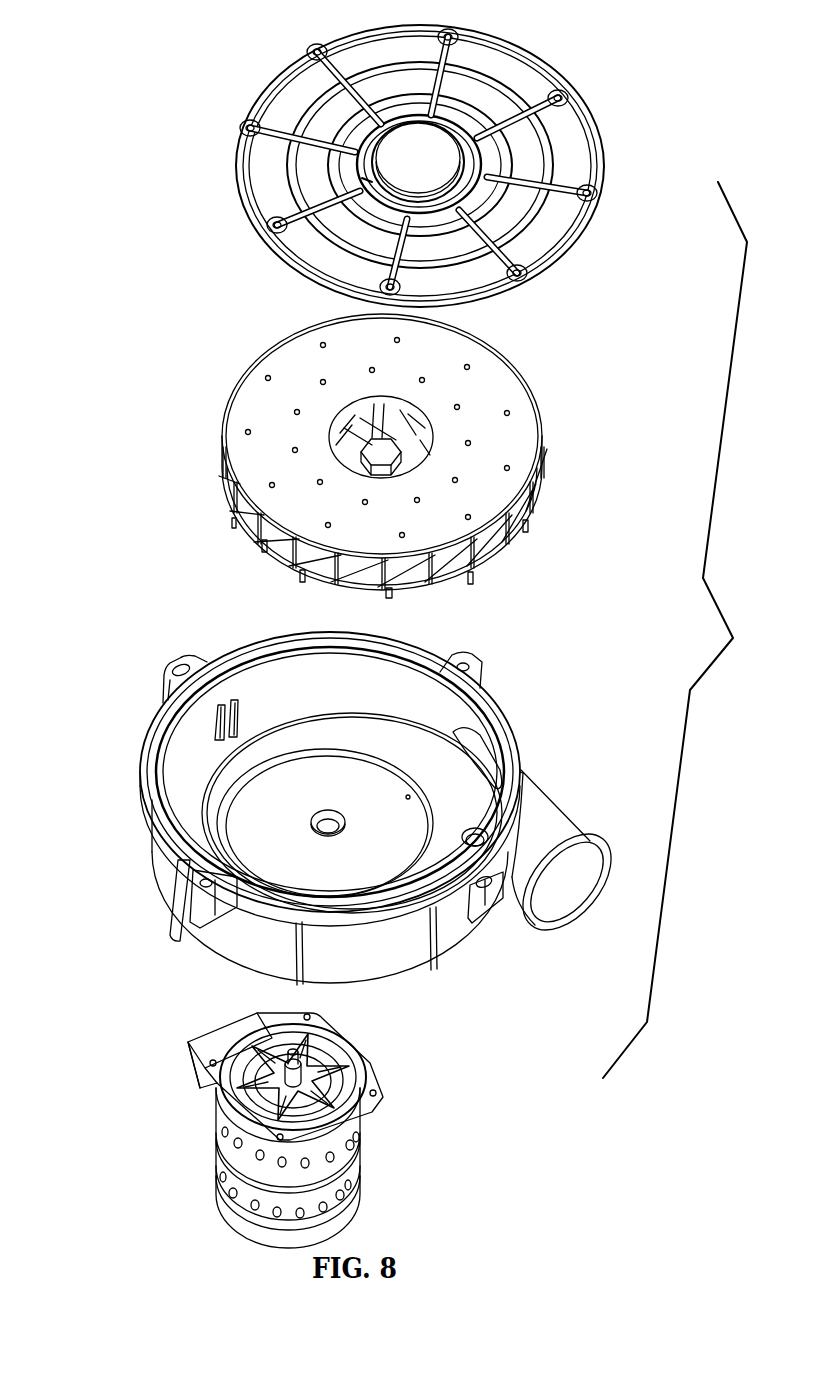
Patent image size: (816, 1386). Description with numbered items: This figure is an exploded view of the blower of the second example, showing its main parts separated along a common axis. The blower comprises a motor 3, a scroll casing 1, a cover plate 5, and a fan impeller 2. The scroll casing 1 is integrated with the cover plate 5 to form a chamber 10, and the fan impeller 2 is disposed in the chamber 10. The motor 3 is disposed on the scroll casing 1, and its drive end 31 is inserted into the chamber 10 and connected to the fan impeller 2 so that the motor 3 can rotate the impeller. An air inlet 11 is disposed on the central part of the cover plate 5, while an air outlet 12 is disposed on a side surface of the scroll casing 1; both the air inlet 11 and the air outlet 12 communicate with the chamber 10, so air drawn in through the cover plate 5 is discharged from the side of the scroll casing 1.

The scroll casing 1 is at (163, 865).
The fan impeller 2 is at (268, 413).
The motor 3 is at (248, 1203).
The cover plate 5 is at (563, 142).
The chamber 10 is at (225, 778).
The air inlet 11 is at (402, 165).
The air outlet 12 is at (562, 892).
The drive end 31 is at (303, 1075).